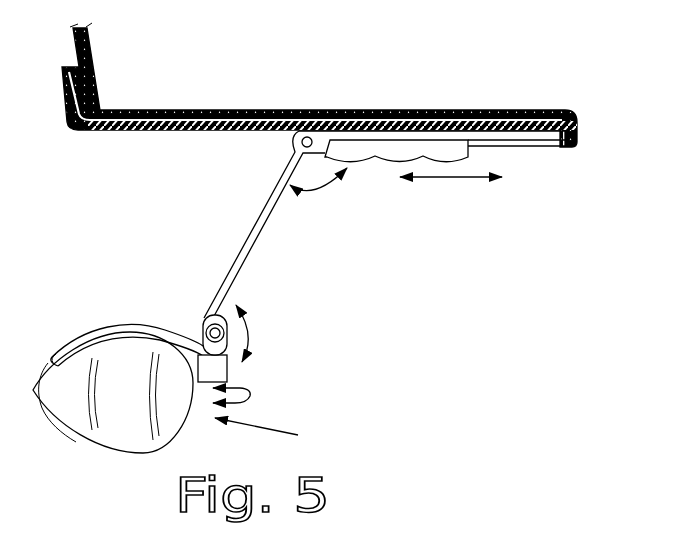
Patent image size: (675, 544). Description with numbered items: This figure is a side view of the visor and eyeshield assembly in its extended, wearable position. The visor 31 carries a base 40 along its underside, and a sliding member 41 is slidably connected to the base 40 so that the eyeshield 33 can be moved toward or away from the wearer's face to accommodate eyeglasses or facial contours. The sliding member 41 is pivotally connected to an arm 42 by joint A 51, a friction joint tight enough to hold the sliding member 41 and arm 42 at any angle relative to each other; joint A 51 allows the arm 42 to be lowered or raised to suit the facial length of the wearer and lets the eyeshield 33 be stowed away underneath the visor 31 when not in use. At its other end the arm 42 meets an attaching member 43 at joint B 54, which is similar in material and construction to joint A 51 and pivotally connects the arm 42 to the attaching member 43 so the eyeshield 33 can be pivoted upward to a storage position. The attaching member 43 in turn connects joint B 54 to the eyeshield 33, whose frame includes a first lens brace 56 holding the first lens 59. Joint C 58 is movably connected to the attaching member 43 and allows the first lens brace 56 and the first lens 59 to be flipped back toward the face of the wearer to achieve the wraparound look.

The visor 31 is at (392, 113).
The eyeshield 33 is at (273, 435).
The base 40 is at (537, 143).
The sliding member 41 is at (367, 150).
The arm 42 is at (254, 218).
The attaching member 43 is at (202, 327).
The joint A 51 is at (300, 143).
The joint B 54 is at (200, 328).
The first lens brace 56 is at (82, 342).
The joint C 58 is at (228, 375).
The first lens 59 is at (132, 406).